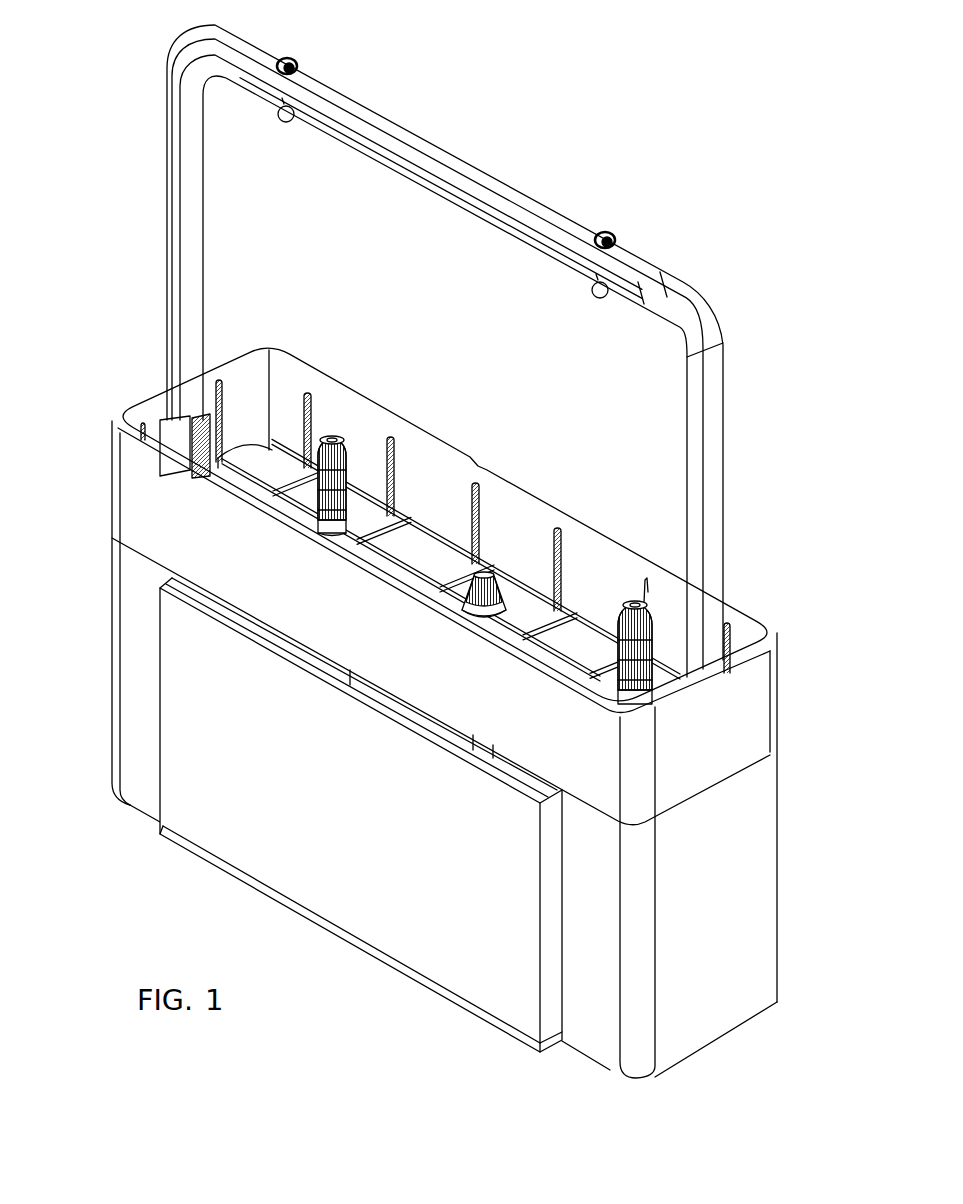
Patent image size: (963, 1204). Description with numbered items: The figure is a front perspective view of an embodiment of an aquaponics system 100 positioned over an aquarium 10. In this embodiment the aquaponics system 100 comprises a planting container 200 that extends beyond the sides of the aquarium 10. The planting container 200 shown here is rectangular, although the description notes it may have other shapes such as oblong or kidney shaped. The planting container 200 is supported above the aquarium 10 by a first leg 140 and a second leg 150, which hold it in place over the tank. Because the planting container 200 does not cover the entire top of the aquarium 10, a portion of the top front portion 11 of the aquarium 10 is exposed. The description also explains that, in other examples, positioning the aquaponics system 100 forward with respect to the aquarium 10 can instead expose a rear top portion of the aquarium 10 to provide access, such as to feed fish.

The aquarium 10 is at (361, 815).
The top front portion 11 is at (313, 658).
The aquaponics system 100 is at (758, 810).
The first leg 140 is at (716, 855).
The second leg 150 is at (130, 607).
The planting container 200 is at (441, 351).